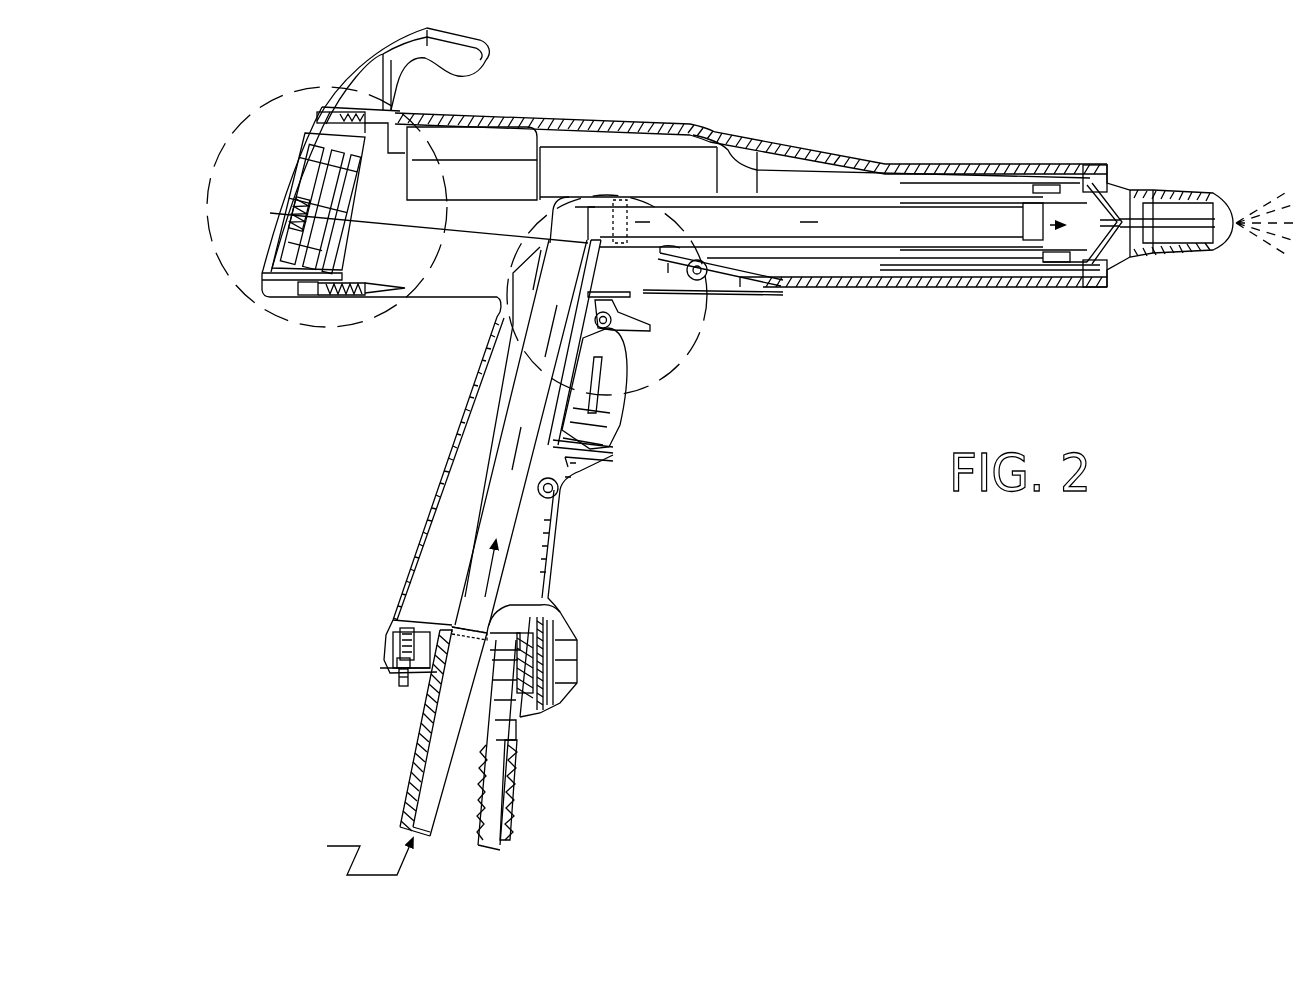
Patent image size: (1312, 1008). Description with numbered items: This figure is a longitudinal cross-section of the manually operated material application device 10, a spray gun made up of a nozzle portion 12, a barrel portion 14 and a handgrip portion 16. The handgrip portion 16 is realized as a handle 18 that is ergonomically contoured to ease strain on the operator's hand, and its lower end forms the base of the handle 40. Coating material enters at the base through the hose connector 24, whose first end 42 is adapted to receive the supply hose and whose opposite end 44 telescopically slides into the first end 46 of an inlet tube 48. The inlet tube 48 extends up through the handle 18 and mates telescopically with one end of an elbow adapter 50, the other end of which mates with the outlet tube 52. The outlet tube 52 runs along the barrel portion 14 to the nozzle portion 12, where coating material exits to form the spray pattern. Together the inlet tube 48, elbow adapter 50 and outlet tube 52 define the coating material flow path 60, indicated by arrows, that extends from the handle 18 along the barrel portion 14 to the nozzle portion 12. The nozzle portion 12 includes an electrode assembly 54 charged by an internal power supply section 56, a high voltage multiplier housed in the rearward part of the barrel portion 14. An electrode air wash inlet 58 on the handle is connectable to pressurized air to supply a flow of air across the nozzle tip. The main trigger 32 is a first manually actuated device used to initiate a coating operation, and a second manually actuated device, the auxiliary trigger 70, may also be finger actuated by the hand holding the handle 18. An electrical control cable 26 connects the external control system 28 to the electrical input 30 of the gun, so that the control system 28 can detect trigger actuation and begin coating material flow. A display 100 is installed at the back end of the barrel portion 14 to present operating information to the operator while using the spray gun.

The material application device 10 is at (868, 550).
The nozzle portion 12 is at (1129, 156).
The barrel portion 14 is at (762, 124).
The handgrip portion 16 is at (440, 386).
The handle 18 is at (443, 478).
The hose connector 24 is at (408, 738).
The electrical control cable 26 is at (522, 790).
The control system 28 is at (477, 867).
The electrical input 30 is at (545, 727).
The main trigger 32 is at (600, 445).
The base of the handle 40 is at (388, 642).
The first end of hose connector 42 is at (403, 820).
The opposite end of hose connector 44 is at (463, 622).
The first end of inlet tube 46 is at (417, 690).
The inlet tube 48 is at (455, 590).
The elbow adapter 50 is at (545, 258).
The outlet tube 52 is at (737, 240).
The electrode assembly 54 is at (1132, 244).
The power supply section 56 is at (479, 169).
The electrode air wash inlet 58 is at (393, 689).
The coating material flow path 60 is at (513, 457).
The auxiliary trigger 70 is at (670, 326).
The display 100 is at (262, 133).